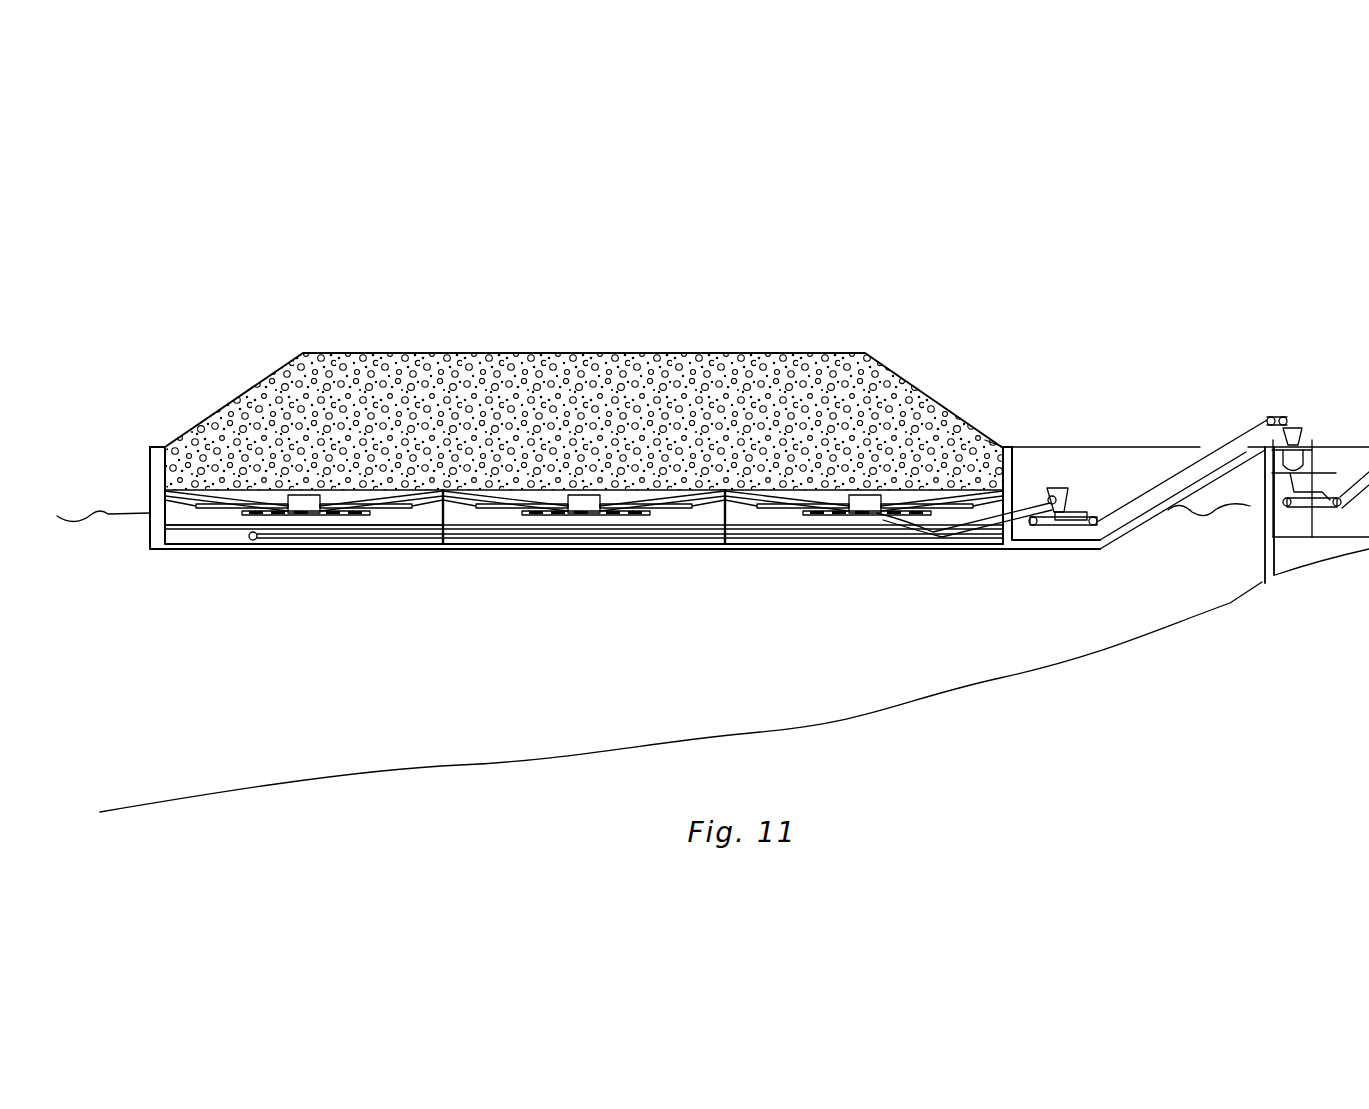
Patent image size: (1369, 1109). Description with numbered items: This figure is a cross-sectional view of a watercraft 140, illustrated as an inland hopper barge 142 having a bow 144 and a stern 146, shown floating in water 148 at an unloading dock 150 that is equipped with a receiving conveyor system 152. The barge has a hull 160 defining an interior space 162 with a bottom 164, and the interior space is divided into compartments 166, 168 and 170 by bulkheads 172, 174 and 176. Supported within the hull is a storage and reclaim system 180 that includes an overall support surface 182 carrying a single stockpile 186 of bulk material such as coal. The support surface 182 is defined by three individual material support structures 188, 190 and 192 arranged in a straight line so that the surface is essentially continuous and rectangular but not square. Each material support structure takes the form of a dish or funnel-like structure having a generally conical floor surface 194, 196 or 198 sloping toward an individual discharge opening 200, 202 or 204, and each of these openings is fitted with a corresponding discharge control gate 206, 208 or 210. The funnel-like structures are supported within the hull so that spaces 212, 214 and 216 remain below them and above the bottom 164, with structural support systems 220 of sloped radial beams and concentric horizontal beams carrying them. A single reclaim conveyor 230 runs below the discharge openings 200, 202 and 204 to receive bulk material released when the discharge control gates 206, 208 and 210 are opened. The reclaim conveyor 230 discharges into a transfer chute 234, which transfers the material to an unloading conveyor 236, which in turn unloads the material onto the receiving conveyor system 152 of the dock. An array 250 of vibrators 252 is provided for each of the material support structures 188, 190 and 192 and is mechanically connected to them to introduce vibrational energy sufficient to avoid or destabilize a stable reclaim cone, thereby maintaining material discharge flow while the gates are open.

The watercraft 140 is at (197, 300).
The inland hopper barge 142 is at (348, 270).
The bow 144 is at (1181, 342).
The stern 146 is at (203, 365).
The water 148 is at (104, 512).
The unloading dock 150 is at (1250, 505).
The receiving conveyor system 152 is at (1337, 400).
The hull 160 is at (165, 523).
The interior space 162 is at (213, 525).
The bottom 164 is at (245, 534).
The compartment 166 is at (187, 525).
The compartment 168 is at (460, 515).
The compartment 170 is at (742, 515).
The bulkhead 172 is at (440, 510).
The bulkhead 174 is at (722, 513).
The bulkhead 176 is at (1008, 528).
The storage and reclaim system 180 is at (1002, 343).
The overall support surface 182 is at (990, 440).
The stockpile 186 is at (668, 375).
The material support structure 188 is at (278, 498).
The material support structure 190 is at (528, 492).
The material support structure 192 is at (802, 493).
The conical floor surface 194 is at (392, 497).
The conical floor surface 196 is at (667, 493).
The conical floor surface 198 is at (907, 497).
The discharge opening 200 is at (321, 498).
The discharge opening 202 is at (593, 503).
The discharge opening 204 is at (870, 505).
The discharge control gate 206 is at (300, 522).
The discharge control gate 208 is at (617, 521).
The discharge control gate 210 is at (862, 522).
The space 212 is at (165, 522).
The space 214 is at (495, 513).
The space 216 is at (785, 517).
The structural support system 220 is at (357, 681).
The reclaim conveyor 230 is at (957, 530).
The transfer chute 234 is at (1072, 497).
The unloading conveyor 236 is at (1238, 435).
The array of vibrators 250 is at (240, 677).
The vibrator 252 is at (372, 510).